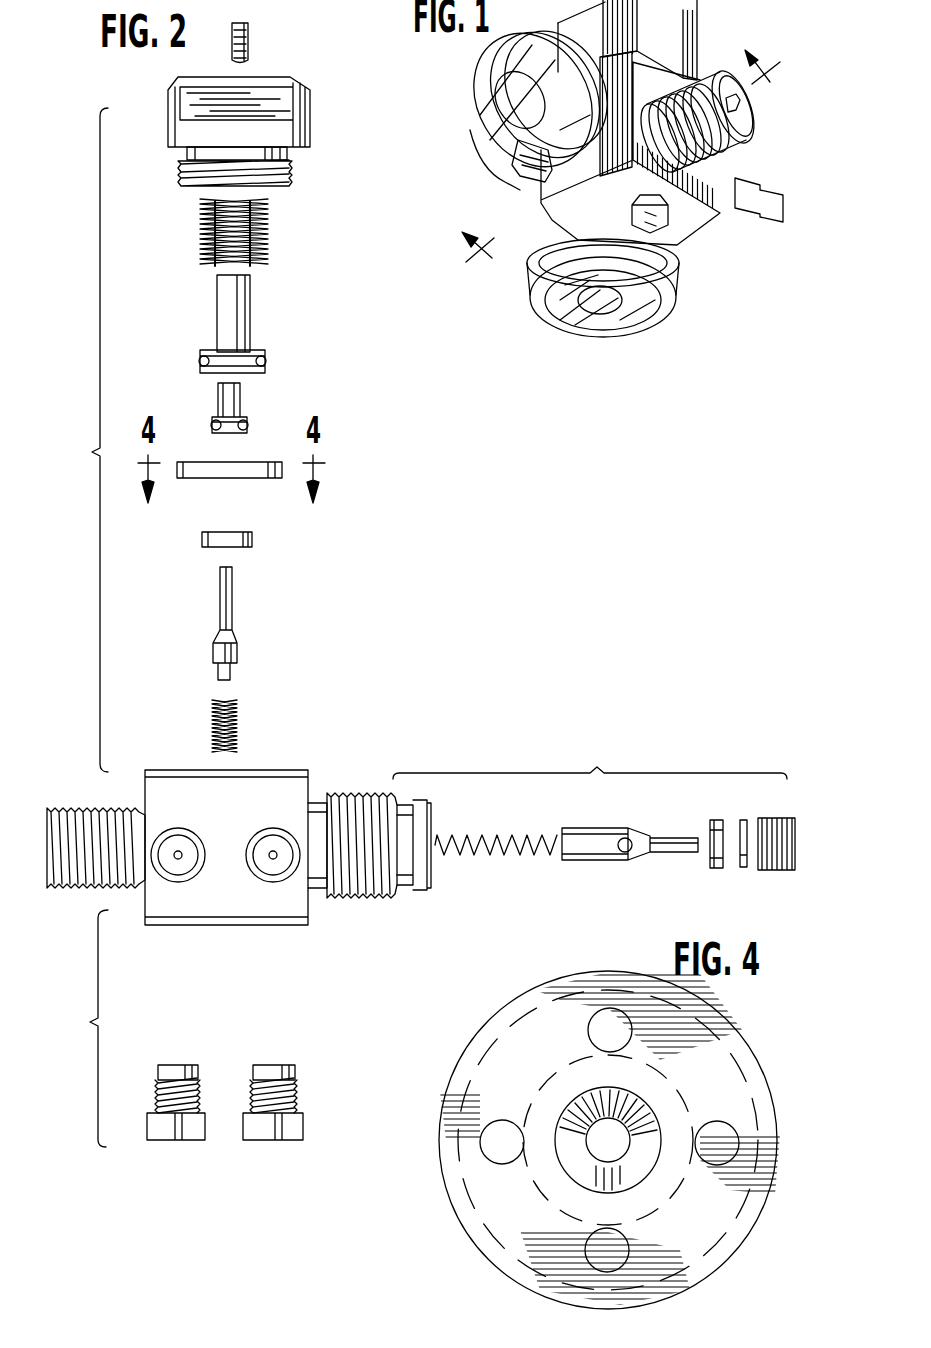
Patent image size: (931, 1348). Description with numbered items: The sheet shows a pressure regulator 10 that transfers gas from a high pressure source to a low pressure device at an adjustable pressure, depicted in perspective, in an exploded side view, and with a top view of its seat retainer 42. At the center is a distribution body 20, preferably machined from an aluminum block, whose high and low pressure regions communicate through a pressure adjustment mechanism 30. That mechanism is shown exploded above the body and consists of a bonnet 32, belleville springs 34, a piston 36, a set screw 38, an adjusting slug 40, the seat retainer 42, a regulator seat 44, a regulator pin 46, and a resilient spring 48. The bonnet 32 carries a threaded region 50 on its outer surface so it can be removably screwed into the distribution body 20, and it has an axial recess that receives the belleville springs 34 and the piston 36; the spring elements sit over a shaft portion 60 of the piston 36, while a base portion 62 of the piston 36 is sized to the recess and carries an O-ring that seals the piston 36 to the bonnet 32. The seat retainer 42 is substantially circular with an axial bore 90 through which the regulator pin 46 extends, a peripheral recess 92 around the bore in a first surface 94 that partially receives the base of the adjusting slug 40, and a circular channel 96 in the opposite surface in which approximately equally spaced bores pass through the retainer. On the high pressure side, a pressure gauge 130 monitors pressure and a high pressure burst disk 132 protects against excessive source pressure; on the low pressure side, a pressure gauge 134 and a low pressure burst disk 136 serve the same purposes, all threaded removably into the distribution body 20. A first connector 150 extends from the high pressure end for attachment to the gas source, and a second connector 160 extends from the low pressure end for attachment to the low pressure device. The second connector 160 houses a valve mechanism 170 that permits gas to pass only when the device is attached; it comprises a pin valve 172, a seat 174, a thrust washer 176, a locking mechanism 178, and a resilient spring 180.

In FIG. 2, the pressure regulator 10 is at (440, 607).
In FIG. 1, the pressure regulator 10 is at (766, 229).
In FIG. 2, the distribution body 20 is at (300, 769).
In FIG. 2, the pressure adjustment mechanism 30 is at (86, 440).
In FIG. 2, the bonnet 32 is at (310, 100).
In FIG. 2, the belleville springs 34 is at (268, 235).
In FIG. 2, the piston 36 is at (250, 310).
In FIG. 2, the set screw 38 is at (248, 43).
In FIG. 2, the adjusting slug 40 is at (268, 407).
In FIG. 2, the seat retainer 42 is at (262, 480).
In FIG. 4, the seat retainer 42 is at (733, 1012).
In FIG. 2, the regulator seat 44 is at (202, 548).
In FIG. 2, the regulator pin 46 is at (232, 625).
In FIG. 2, the resilient spring 48 is at (237, 722).
In FIG. 2, the threaded region 50 is at (292, 170).
In FIG. 2, the shaft portion 60 is at (222, 303).
In FIG. 2, the base portion 62 is at (206, 378).
In FIG. 4, the axial bore 90 is at (595, 1148).
In FIG. 4, the peripheral recess 92 is at (588, 1035).
In FIG. 4, the first surface 94 is at (760, 1082).
In FIG. 4, the circular channel 96 is at (735, 1220).
In FIG. 1, the pressure gauge 130 is at (575, 336).
In FIG. 2, the high pressure burst disk 132 is at (177, 1140).
In FIG. 1, the high pressure burst disk 132 is at (503, 190).
In FIG. 1, the pressure gauge 134 is at (463, 108).
In FIG. 2, the low pressure burst disk 136 is at (280, 1140).
In FIG. 1, the low pressure burst disk 136 is at (655, 233).
In FIG. 2, the first connector 150 is at (55, 888).
In FIG. 2, the second connector 160 is at (375, 898).
In FIG. 2, the valve mechanism 170 is at (590, 760).
In FIG. 2, the pin valve 172 is at (612, 860).
In FIG. 2, the seat 174 is at (710, 862).
In FIG. 2, the thrust washer 176 is at (740, 820).
In FIG. 2, the locking mechanism 178 is at (767, 872).
In FIG. 2, the resilient spring 180 is at (487, 855).